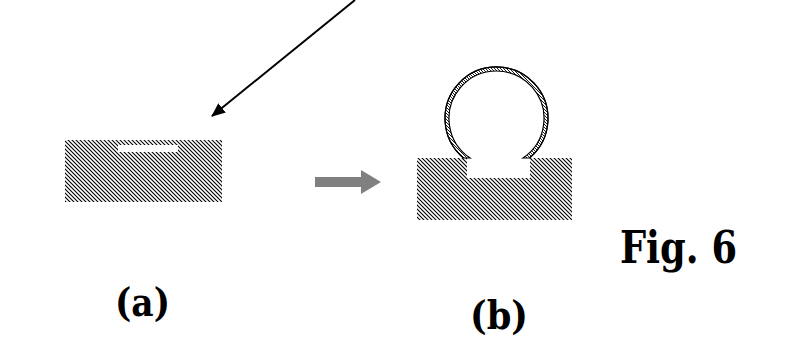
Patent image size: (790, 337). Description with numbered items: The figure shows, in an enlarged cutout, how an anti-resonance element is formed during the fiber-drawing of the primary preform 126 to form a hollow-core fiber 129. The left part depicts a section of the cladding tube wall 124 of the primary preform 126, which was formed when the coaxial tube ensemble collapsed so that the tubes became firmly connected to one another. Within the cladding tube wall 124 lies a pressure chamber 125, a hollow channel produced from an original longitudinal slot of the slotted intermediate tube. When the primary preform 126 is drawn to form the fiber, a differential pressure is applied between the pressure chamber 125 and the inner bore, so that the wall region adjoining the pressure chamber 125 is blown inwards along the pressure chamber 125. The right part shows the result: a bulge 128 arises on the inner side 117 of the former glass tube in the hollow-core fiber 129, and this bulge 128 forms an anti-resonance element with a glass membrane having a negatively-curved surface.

The inner side 117 is at (440, 165).
The cladding tube wall 124 is at (75, 189).
The pressure chamber 125 is at (146, 155).
The primary preform 126 is at (81, 126).
The bulge 128 is at (536, 82).
The hollow-core fiber 129 is at (471, 64).